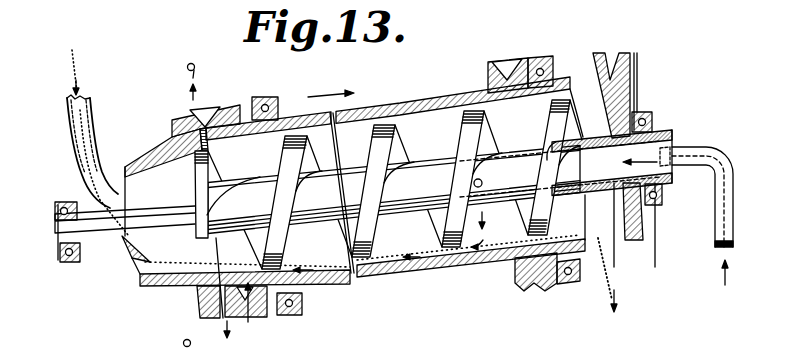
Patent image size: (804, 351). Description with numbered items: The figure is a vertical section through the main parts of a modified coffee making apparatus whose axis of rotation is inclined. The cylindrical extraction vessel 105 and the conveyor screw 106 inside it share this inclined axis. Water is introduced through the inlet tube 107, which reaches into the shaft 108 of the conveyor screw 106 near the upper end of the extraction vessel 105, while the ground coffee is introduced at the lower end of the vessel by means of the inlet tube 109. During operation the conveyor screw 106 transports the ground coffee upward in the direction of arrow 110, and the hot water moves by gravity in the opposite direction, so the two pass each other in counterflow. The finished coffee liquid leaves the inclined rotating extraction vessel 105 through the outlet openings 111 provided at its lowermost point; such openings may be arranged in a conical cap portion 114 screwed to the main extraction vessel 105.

The extraction vessel 105 is at (407, 102).
The conveyor screw 106 is at (452, 247).
The inlet tube 107 is at (695, 154).
The shaft 108 is at (593, 133).
The inlet tube 109 is at (80, 165).
The arrow 110 is at (322, 92).
The outlet openings 111 is at (226, 295).
The conical cap portion 114 is at (172, 118).